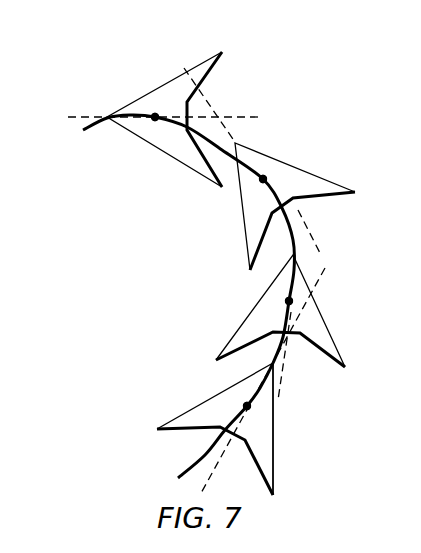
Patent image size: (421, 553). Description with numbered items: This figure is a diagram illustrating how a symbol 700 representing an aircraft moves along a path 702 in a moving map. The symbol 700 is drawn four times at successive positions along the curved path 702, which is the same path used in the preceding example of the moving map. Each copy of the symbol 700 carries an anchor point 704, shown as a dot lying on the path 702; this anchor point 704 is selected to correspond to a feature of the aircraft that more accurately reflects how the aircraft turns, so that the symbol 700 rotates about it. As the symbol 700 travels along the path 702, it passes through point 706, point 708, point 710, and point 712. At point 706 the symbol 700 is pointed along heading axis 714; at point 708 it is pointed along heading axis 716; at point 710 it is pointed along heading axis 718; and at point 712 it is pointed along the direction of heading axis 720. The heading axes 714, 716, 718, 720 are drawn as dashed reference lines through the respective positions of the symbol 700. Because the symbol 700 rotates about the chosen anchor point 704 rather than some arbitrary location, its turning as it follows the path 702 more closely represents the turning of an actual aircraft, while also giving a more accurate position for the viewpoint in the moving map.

The symbol 700 is at (188, 70).
The path 702 is at (190, 468).
The anchor point 704 is at (152, 128).
The point 706 is at (250, 410).
The point 708 is at (286, 308).
The point 710 is at (265, 177).
The point 712 is at (153, 107).
The heading axis 714 is at (325, 273).
The heading axis 716 is at (299, 210).
The heading axis 718 is at (203, 97).
The heading axis 720 is at (92, 115).